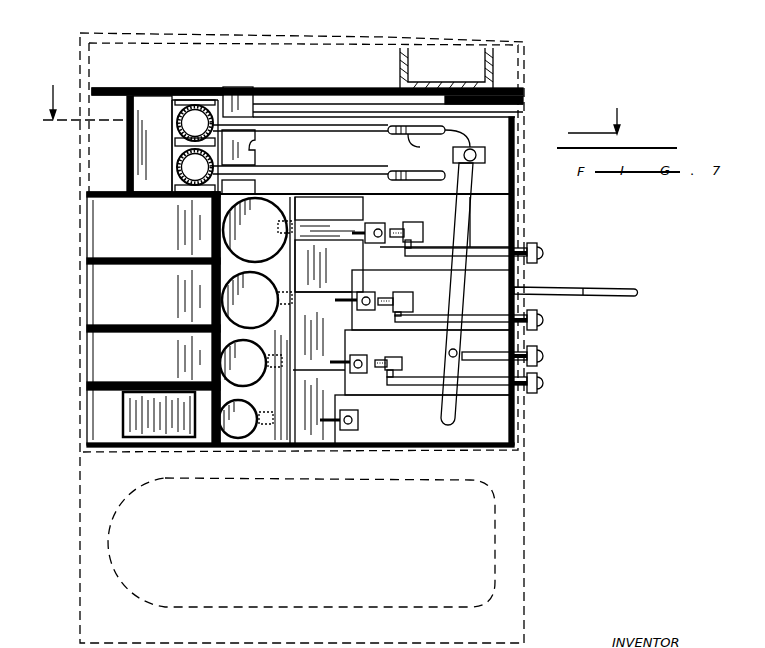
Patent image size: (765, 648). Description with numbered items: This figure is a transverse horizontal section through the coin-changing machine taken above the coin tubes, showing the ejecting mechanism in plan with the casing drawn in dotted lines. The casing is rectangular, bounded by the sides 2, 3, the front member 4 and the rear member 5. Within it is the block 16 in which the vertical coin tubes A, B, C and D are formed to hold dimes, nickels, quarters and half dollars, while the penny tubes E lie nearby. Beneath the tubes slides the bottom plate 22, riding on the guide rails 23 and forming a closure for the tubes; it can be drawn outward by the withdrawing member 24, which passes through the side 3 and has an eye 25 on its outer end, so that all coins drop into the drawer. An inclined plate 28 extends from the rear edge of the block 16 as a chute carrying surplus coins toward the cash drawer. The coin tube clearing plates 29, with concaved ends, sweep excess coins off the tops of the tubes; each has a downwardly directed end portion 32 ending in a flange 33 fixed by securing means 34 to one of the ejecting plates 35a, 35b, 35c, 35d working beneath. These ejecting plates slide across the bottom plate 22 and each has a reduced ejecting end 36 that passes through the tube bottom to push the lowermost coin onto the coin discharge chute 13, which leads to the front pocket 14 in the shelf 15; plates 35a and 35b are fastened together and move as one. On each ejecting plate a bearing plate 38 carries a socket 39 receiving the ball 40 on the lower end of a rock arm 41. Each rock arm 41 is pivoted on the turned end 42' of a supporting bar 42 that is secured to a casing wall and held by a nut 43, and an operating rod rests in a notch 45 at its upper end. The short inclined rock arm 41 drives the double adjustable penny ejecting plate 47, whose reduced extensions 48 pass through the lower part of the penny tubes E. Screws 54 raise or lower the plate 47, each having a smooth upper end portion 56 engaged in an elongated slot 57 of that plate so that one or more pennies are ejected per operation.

The side member 2 is at (528, 110).
The side member 3 is at (86, 262).
The front member 4 is at (552, 470).
The rear member 5 is at (385, 40).
The coin discharge chute 13 is at (127, 178).
The front pocket 14 is at (118, 553).
The shelf 15 is at (515, 541).
The block 16 is at (296, 193).
The bottom plate 22 is at (253, 89).
The guide rails 23 is at (120, 87).
The withdrawing member 24 is at (562, 283).
The eye 25 is at (607, 286).
The inclined plate 28 is at (121, 408).
The coin tube clearing plates 29 is at (374, 223).
The downwardly directed end portion 32 is at (364, 226).
The flange 33 is at (382, 243).
The securing means 34 is at (377, 243).
The coin ejecting plate 35a is at (489, 415).
The coin ejecting plate 35b is at (489, 344).
The coin ejecting plate 35c is at (489, 285).
The coin ejecting plate 35d is at (514, 216).
The reduced ejecting end 36 is at (460, 158).
The bearing plate 38 is at (424, 235).
The socket 39 is at (457, 131).
The ball 40 is at (453, 156).
The rock arm 41 is at (421, 229).
The supporting bar 42 is at (453, 291).
The turned end 42' is at (415, 284).
The nut 43 is at (538, 242).
The notch 45 is at (450, 351).
The coin ejecting plate 47 is at (486, 152).
The reduced extensions 48 is at (256, 148).
The screw 54 is at (388, 129).
The smooth upper end portion 56 is at (421, 144).
The elongated slot 57 is at (395, 126).
The coin tube A is at (246, 419).
The coin tube B is at (251, 363).
The coin tube C is at (257, 300).
The coin tube D is at (257, 230).
The penny tubes E is at (196, 105).